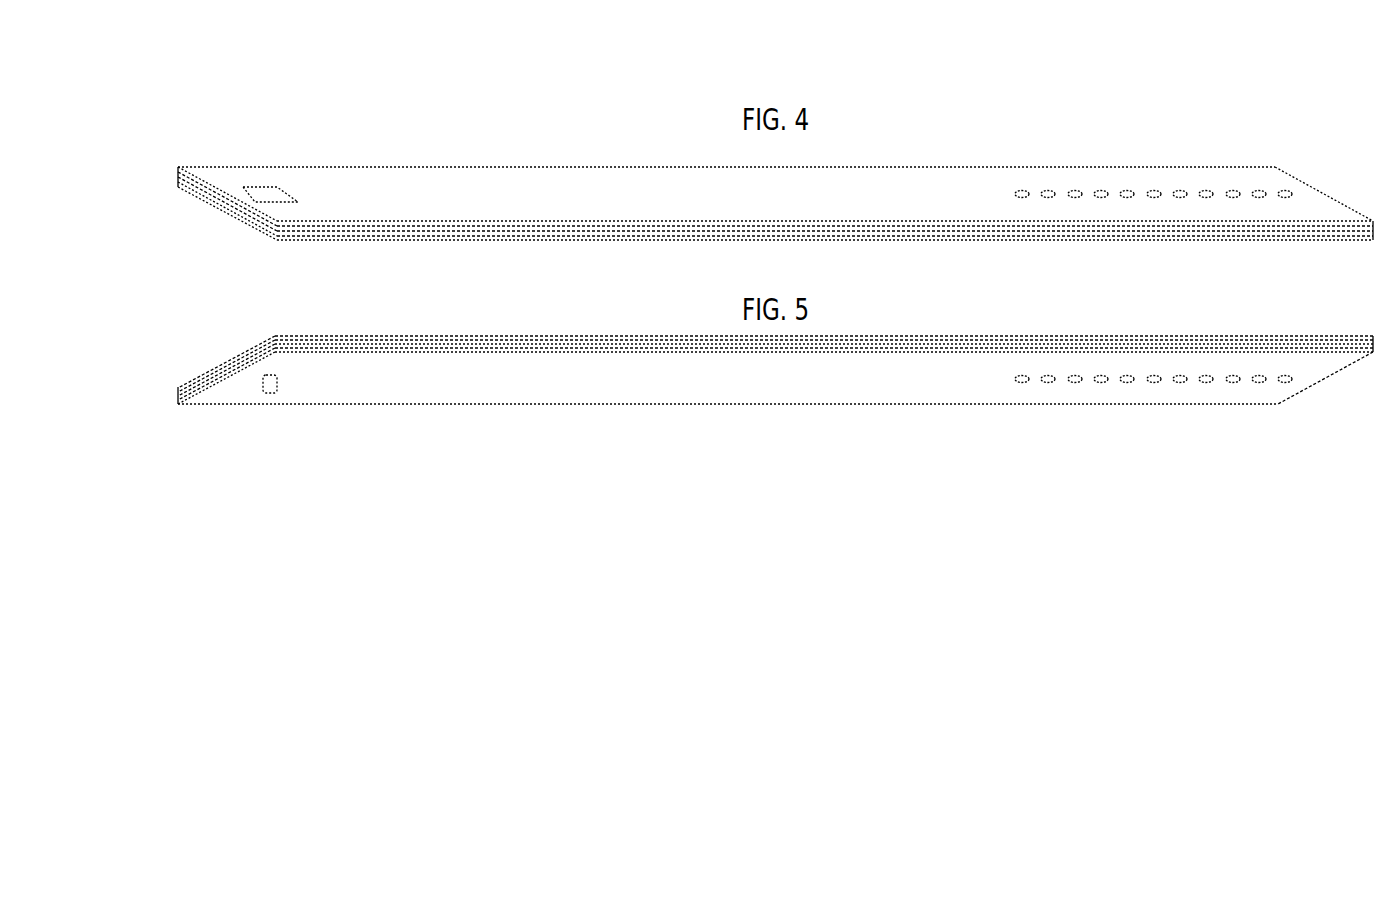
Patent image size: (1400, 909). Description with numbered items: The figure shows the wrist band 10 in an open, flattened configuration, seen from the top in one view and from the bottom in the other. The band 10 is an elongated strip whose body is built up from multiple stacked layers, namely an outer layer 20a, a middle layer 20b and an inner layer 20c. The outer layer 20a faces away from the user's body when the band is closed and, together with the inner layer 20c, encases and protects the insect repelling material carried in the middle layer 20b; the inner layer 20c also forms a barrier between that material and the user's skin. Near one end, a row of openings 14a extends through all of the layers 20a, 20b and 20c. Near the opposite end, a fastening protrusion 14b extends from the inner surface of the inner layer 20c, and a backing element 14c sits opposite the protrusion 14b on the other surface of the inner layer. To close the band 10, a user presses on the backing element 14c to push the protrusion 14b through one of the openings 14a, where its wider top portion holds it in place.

In FIG. 4, the wrist band 10 is at (568, 150).
In FIG. 5, the wrist band 10 is at (553, 443).
In FIG. 4, the openings 14a is at (1160, 147).
In FIG. 5, the openings 14a is at (1292, 385).
In FIG. 5, the fastening protrusion 14b is at (270, 392).
In FIG. 4, the backing element 14c is at (268, 193).
In FIG. 4, the outer layer 20a is at (450, 187).
In FIG. 5, the outer layer 20a is at (178, 390).
In FIG. 4, the middle layer 20b is at (287, 228).
In FIG. 5, the middle layer 20b is at (192, 393).
In FIG. 4, the inner layer 20c is at (326, 234).
In FIG. 5, the inner layer 20c is at (437, 370).